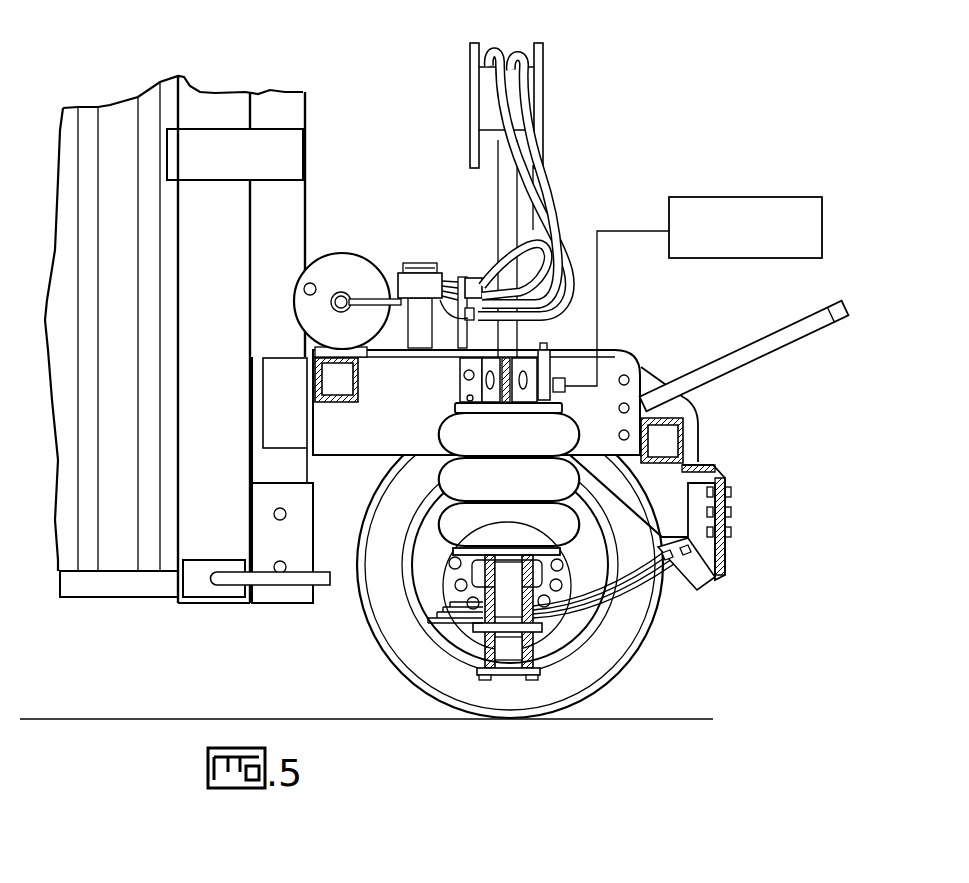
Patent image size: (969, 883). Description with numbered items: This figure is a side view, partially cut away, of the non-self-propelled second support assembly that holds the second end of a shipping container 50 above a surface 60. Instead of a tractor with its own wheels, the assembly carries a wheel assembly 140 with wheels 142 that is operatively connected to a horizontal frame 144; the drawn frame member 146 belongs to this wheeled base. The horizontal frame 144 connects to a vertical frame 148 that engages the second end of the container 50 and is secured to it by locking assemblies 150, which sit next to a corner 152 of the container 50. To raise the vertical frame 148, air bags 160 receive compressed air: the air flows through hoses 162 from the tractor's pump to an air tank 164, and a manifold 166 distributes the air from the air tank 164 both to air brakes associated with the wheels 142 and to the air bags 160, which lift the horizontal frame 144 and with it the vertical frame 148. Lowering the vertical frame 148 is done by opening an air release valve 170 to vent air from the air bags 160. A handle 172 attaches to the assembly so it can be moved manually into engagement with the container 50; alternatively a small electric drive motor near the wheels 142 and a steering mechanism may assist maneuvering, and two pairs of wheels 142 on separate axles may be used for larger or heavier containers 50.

The container 50 is at (130, 94).
The surface 60 is at (180, 718).
The wheel assembly 140 is at (664, 625).
The wheels 142 is at (592, 666).
The horizontal frame 144 is at (480, 640).
The mounting frame 146 is at (628, 368).
The vertical frame 148 is at (278, 206).
The locking assemblies 150 is at (248, 618).
The corner 152 is at (225, 604).
The air bags 160 is at (526, 494).
The hoses 162 is at (540, 205).
The air tank 164 is at (346, 268).
The manifold 166 is at (478, 282).
The air release valve 170 is at (758, 196).
The handle 172 is at (723, 367).